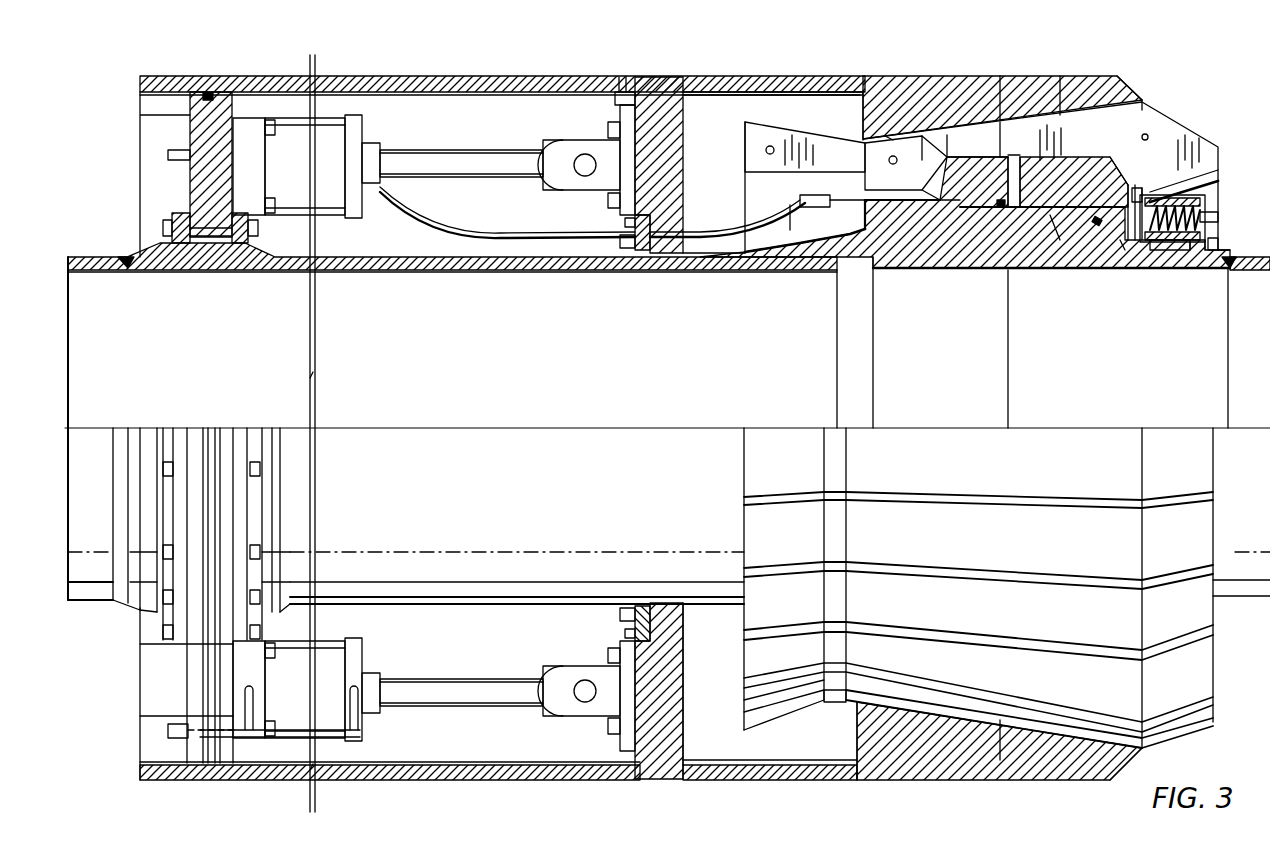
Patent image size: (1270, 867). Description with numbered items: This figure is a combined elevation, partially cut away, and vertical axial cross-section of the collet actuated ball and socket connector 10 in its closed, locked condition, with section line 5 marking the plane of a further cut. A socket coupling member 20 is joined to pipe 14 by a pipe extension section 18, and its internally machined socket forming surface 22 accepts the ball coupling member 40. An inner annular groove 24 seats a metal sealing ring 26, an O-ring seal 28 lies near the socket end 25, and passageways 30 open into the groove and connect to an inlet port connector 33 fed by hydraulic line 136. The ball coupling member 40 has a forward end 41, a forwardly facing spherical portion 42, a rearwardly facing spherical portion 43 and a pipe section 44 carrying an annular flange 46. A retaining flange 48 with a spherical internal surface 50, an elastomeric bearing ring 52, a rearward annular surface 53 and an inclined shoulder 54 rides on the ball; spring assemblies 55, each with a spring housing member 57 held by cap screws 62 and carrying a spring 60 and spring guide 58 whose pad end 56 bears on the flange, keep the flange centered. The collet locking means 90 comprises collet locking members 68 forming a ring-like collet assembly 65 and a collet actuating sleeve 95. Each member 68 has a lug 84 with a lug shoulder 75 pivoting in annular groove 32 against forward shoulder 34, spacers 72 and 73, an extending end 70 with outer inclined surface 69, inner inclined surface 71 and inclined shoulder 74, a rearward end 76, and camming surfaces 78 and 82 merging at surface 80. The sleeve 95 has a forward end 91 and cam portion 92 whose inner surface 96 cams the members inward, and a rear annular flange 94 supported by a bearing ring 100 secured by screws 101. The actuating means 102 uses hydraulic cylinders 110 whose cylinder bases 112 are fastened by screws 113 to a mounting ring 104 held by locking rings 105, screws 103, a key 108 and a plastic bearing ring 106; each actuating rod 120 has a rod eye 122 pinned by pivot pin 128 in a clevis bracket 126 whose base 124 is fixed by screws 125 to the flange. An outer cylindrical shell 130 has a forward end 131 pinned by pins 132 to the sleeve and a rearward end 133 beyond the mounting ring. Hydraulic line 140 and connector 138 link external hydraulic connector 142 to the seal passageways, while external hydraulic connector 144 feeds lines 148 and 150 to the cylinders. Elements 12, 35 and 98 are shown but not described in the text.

The section line 5 is at (1268, 50).
The collet actuated ball and socket connector 10 is at (512, 788).
The nozzle body exterior 12 is at (978, 604).
The pipe 14 is at (120, 262).
The pipe extension section 18 is at (410, 266).
The socket coupling member 20 is at (820, 250).
The socket forming surface 22 is at (865, 240).
The inner annular groove 24 is at (975, 200).
The socket end 25 is at (1016, 165).
The metal sealing ring 26 is at (1000, 160).
The O-ring seal 28 is at (1000, 210).
The passageways 30 is at (868, 240).
The annular groove 32 is at (800, 200).
The inlet port connector 33 is at (790, 232).
The forward shoulder 34 is at (925, 160).
The valve 35 is at (868, 160).
The ball coupling member 40 is at (1045, 258).
The forward end 41 is at (875, 280).
The forwardly facing outer spherical portion 42 is at (910, 240).
The rearwardly facing outer spherical portion 43 is at (1080, 245).
The pipe section 44 is at (1180, 255).
The annular flange 46 is at (1205, 258).
The retaining flange 48 is at (1074, 182).
The spherical internal surface 50 is at (1085, 215).
The elastomeric bearing ring 52 is at (1100, 230).
The rearwardly facing annular surface 53 is at (1128, 255).
The rearwardly facing inclined shoulder 54 is at (1135, 188).
The spring assembly 55 is at (1228, 278).
The pad end 56 is at (1140, 195).
The spring housing member 57 is at (1160, 252).
The spring guide 58 is at (1215, 222).
The spring 60 is at (1205, 210).
The cap screw 62 is at (1218, 245).
The collet assembly 65 is at (1188, 108).
The collet locking member 68 is at (1190, 140).
The outer inclined surface 69 is at (1150, 135).
The extending end 70 is at (1215, 168).
The inner inclined surface 71 is at (1212, 178).
The spacer 72 is at (1146, 132).
The spacer 73 is at (766, 152).
The inclined shoulder 74 is at (1115, 165).
The lug shoulder 75 is at (945, 150).
The rearward end 76 is at (745, 130).
The camming surface 78 is at (1070, 90).
The merging surface 80 is at (832, 705).
The camming surface 82 is at (775, 140).
The lug 84 is at (935, 215).
The collet locking means 90 is at (882, 66).
The forward end of sleeve 91 is at (1128, 80).
The cam portion 92 is at (1045, 85).
The annular flange 94 is at (670, 95).
The collet actuating sleeve 95 is at (822, 90).
The inner surface of cam end 96 is at (888, 135).
The shoulder 98 is at (850, 740).
The bearing ring 100 is at (643, 250).
The screw 101 is at (625, 222).
The actuating means 102 is at (425, 118).
The screw 103 is at (163, 226).
The mounting ring 104 is at (218, 110).
The locking ring 105 is at (240, 243).
The plastic bearing ring 106 is at (205, 92).
The key 108 is at (195, 225).
The hydraulic cylinder 110 is at (338, 215).
The cylinder base 112 is at (250, 118).
The screw 113 is at (275, 128).
The actuating rod 120 is at (445, 150).
The rod eye 122 is at (550, 140).
The clevis bracket base 124 is at (622, 77).
The screw 125 is at (615, 100).
The clevis bracket 126 is at (572, 180).
The pivot pin 128 is at (582, 154).
The outer cylindrical shell 130 is at (395, 80).
The forward end of shell 131 is at (650, 80).
The pin 132 is at (622, 105).
The rearward end of shell 133 is at (138, 84).
The hydraulic line 136 is at (700, 245).
The connector 138 is at (625, 248).
The hydraulic line 140 is at (430, 222).
The external hydraulic connector 142 is at (168, 155).
The external hydraulic connector 144 is at (168, 730).
The hydraulic line 148 is at (248, 740).
The hydraulic line 150 is at (300, 740).